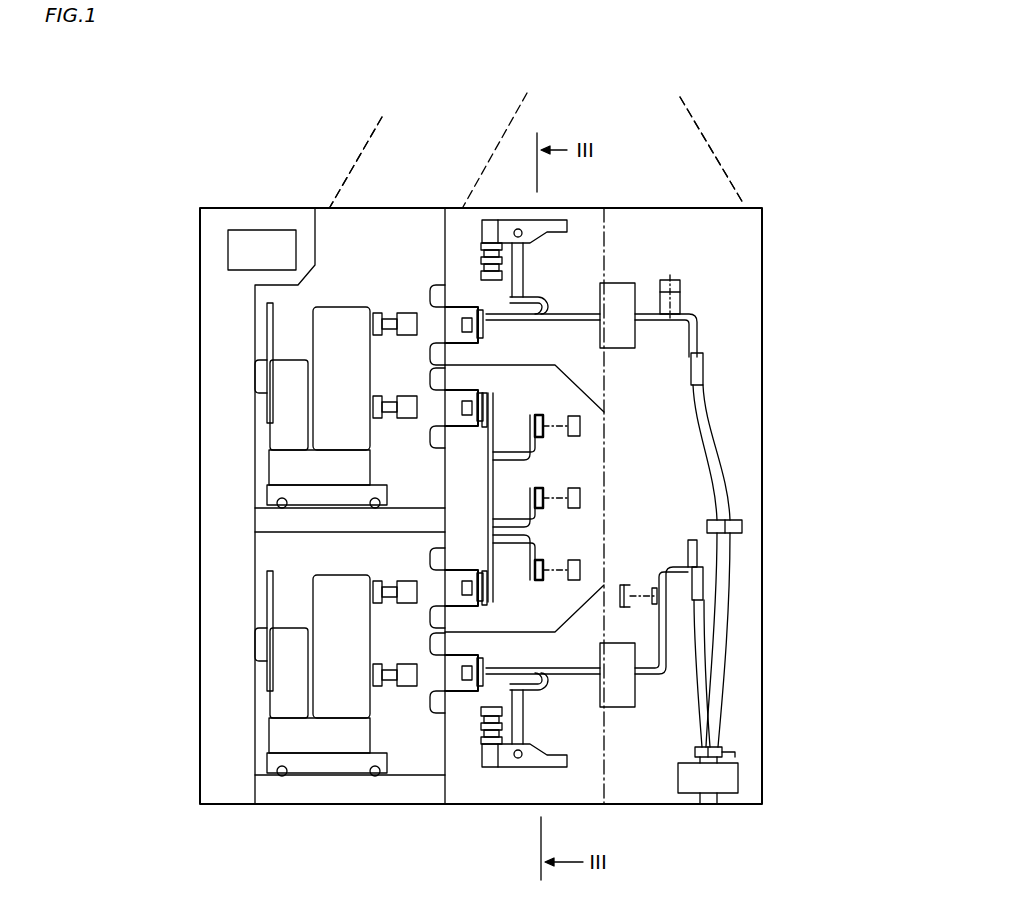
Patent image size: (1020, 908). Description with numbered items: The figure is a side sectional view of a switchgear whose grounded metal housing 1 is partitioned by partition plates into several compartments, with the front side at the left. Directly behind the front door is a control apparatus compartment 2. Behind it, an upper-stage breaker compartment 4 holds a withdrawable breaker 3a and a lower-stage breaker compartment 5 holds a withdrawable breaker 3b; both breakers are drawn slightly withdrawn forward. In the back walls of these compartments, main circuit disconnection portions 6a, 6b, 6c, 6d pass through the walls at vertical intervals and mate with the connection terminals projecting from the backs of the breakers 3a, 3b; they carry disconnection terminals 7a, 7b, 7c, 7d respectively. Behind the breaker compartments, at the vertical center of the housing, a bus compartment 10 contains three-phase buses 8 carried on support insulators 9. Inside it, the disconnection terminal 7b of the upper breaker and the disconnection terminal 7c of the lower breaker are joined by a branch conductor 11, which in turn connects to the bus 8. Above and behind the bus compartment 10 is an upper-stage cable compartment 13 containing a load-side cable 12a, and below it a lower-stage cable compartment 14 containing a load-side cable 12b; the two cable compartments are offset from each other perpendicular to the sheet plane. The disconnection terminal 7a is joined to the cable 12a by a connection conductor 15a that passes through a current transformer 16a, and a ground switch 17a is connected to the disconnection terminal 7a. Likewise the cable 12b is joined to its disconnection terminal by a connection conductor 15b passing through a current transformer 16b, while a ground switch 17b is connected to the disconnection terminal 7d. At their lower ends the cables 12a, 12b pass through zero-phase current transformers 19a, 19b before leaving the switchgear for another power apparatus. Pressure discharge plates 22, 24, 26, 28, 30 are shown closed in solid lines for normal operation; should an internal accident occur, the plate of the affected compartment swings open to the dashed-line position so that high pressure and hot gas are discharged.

The housing 1 is at (222, 208).
The control apparatus compartment 2 is at (220, 293).
The withdrawable breaker 3a is at (292, 417).
The withdrawable breaker 3b is at (290, 690).
The upper-stage breaker compartment 4 is at (343, 245).
The lower-stage breaker compartment 5 is at (302, 570).
The main circuit disconnection portion 6a is at (460, 297).
The main circuit disconnection portion 6b is at (457, 433).
The main circuit disconnection portion 6c is at (447, 558).
The main circuit disconnection portion 6d is at (463, 697).
The disconnection terminal 7a is at (498, 325).
The disconnection terminal 7b is at (485, 403).
The disconnection terminal 7c is at (483, 595).
The disconnection terminal 7d is at (487, 665).
The three-phase buses 8 is at (580, 483).
The support insulators 9 is at (590, 505).
The bus compartment 10 is at (577, 530).
The branch conductor 11 is at (524, 498).
The load-side cable 12a is at (726, 565).
The load-side cable 12b is at (702, 623).
The upper-stage cable compartment 13 is at (587, 230).
The lower-stage cable compartment 14 is at (572, 723).
The connection conductor 15a is at (690, 318).
The connection conductor 15b is at (665, 640).
The current transformer 16a is at (635, 283).
The current transformer 16b is at (637, 697).
The ground switch 17a is at (507, 247).
The ground switch 17b is at (518, 733).
The zero-phase current transformer 19a is at (720, 783).
The zero-phase current transformer 19b is at (779, 818).
The pressure discharge plate 22 is at (340, 167).
The pressure discharge plate 24 is at (339, 162).
The pressure discharge plate 26 is at (492, 150).
The pressure discharge plate 28 is at (708, 145).
The pressure discharge plate 30 is at (736, 150).